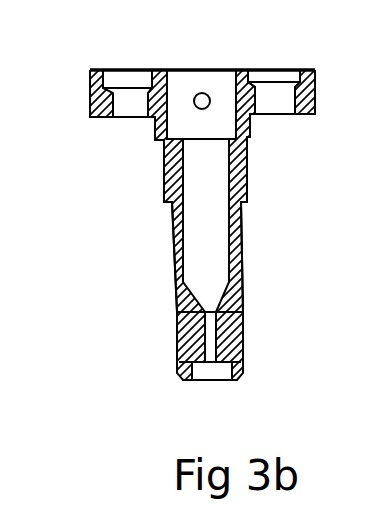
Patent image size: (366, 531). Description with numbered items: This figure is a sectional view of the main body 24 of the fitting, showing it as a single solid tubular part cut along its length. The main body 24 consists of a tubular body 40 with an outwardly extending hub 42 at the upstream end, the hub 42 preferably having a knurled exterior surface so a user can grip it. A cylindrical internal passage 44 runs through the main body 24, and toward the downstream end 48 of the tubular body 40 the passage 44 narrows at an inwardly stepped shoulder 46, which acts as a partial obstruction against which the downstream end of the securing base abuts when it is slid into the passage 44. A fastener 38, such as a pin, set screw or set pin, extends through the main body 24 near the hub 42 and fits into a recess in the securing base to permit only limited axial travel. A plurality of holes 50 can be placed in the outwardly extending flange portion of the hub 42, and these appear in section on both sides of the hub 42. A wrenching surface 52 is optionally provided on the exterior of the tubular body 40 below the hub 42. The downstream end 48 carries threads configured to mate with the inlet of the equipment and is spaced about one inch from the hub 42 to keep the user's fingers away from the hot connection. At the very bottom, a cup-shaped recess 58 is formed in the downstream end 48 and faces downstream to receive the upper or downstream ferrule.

The main body 24 is at (138, 203).
The fastener 38 is at (202, 93).
The tubular body 40 is at (245, 253).
The hub 42 is at (89, 91).
The cylindrical internal passage 44 is at (184, 67).
The inwardly stepped shoulder 46 is at (231, 137).
The downstream end 48 is at (245, 347).
The holes 50 is at (123, 113).
The wrenching surface 52 is at (246, 178).
The cup-shaped recess 58 is at (221, 381).